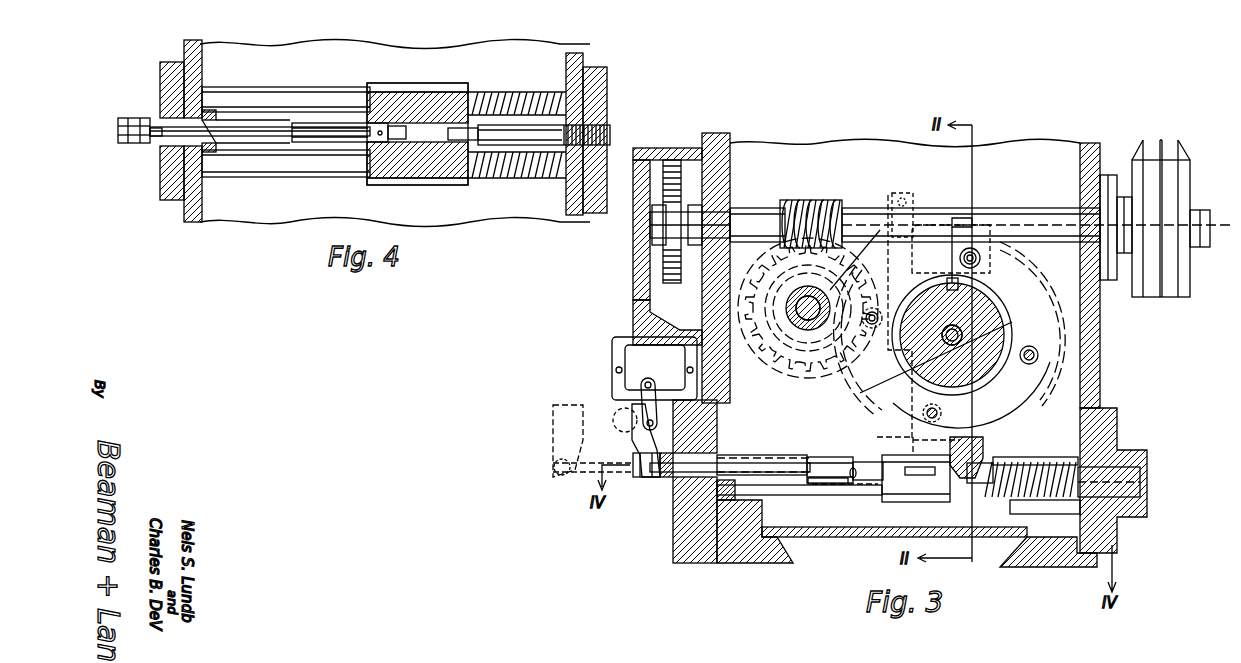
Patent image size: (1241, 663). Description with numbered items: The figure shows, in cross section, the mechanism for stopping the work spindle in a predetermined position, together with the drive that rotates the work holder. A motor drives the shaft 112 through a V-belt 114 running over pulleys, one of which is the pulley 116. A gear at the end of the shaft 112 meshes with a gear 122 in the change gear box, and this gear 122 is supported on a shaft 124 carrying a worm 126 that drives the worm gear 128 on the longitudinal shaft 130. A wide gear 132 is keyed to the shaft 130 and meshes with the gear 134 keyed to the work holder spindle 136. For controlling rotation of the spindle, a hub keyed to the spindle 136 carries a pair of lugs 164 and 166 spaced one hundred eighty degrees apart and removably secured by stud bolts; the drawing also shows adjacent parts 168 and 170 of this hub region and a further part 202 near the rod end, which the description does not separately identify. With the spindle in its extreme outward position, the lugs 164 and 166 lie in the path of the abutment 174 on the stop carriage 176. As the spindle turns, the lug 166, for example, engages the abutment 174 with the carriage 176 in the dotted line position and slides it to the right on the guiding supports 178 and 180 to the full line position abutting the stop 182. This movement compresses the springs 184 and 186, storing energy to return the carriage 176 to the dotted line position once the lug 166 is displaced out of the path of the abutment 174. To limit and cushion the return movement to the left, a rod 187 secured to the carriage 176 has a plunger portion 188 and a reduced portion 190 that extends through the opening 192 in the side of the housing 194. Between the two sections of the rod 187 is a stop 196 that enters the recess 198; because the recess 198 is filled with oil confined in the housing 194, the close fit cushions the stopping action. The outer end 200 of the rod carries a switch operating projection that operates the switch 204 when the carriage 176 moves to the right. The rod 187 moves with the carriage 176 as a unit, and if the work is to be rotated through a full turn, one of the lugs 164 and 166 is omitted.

In FIG. 3, the shaft 112 is at (1020, 218).
In FIG. 3, the V-belt 114 is at (1172, 162).
In FIG. 3, the pulley 116 is at (1132, 285).
In FIG. 3, the gear 122 is at (672, 283).
In FIG. 3, the shaft 124 is at (760, 218).
In FIG. 3, the worm 126 is at (826, 200).
In FIG. 3, the worm gear 128 is at (784, 360).
In FIG. 3, the longitudinal shaft 130 is at (800, 326).
In FIG. 3, the wide gear 132 is at (810, 330).
In FIG. 3, the gear 134 is at (895, 208).
In FIG. 3, the work holder spindle 136 is at (872, 398).
In FIG. 3, the lug 164 is at (964, 210).
In FIG. 3, the lug 166 is at (912, 440).
In FIG. 3, the cam disc 168 is at (995, 318).
In FIG. 3, the pin 170 is at (946, 412).
In FIG. 3, the abutment 174 is at (975, 440).
In FIG. 4, the stop carriage 176 is at (426, 188).
In FIG. 3, the stop carriage 176 is at (940, 500).
In FIG. 4, the guiding support 178 is at (268, 100).
In FIG. 4, the guiding support 180 is at (240, 168).
In FIG. 4, the stop 182 is at (522, 135).
In FIG. 3, the stop 182 is at (1010, 457).
In FIG. 4, the spring 184 is at (490, 90).
In FIG. 4, the spring 186 is at (500, 190).
In FIG. 4, the rod 187 is at (302, 133).
In FIG. 3, the rod 187 is at (818, 484).
In FIG. 3, the plunger portion 188 is at (828, 457).
In FIG. 4, the reduced portion 190 is at (226, 128).
In FIG. 3, the reduced portion 190 is at (756, 455).
In FIG. 4, the opening 192 is at (183, 110).
In FIG. 3, the opening 192 is at (676, 486).
In FIG. 4, the housing 194 is at (184, 208).
In FIG. 3, the housing 194 is at (1130, 380).
In FIG. 4, the stop 196 is at (280, 148).
In FIG. 3, the stop 196 is at (800, 440).
In FIG. 4, the recess 198 is at (226, 150).
In FIG. 3, the recess 198 is at (735, 495).
In FIG. 4, the outer end of the rod 200 is at (116, 140).
In FIG. 3, the outer end of the rod 200 is at (630, 455).
In FIG. 4, the lever 202 is at (134, 148).
In FIG. 3, the lever 202 is at (628, 440).
In FIG. 3, the switch 204 is at (640, 388).